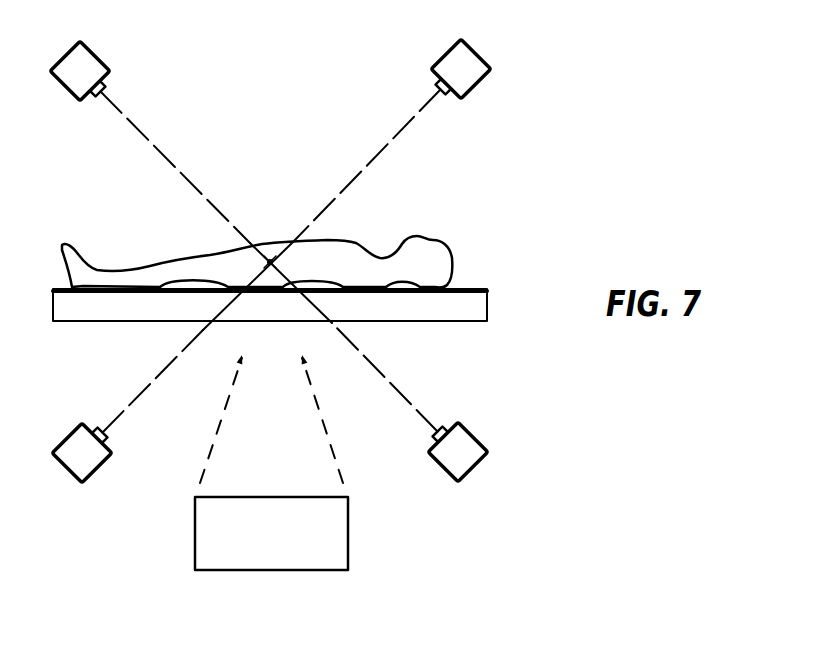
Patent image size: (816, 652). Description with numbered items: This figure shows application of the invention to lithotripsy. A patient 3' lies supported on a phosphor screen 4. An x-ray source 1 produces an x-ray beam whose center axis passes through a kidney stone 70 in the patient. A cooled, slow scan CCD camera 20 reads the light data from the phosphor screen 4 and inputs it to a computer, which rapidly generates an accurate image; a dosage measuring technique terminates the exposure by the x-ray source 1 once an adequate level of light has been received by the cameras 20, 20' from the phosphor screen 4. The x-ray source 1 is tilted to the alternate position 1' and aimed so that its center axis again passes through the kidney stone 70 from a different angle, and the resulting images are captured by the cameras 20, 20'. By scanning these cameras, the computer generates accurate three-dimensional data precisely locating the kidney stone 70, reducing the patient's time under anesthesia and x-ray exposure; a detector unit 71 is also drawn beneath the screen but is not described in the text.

The x-ray source 1 is at (150, 139).
The alternate position of x-ray source 1' is at (414, 139).
The cooled, slow scan CCD camera 20 is at (436, 405).
The cooled, slow scan CCD camera 20' is at (127, 423).
The patient 3' is at (285, 252).
The phosphor screen 4 is at (482, 289).
The kidney stone 70 is at (278, 262).
The imaging device / detector 71 is at (348, 532).